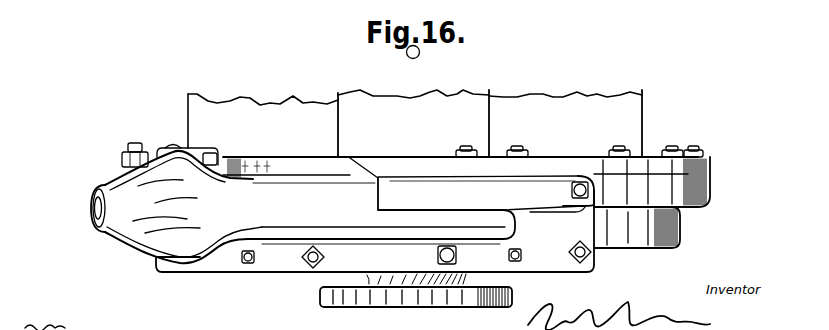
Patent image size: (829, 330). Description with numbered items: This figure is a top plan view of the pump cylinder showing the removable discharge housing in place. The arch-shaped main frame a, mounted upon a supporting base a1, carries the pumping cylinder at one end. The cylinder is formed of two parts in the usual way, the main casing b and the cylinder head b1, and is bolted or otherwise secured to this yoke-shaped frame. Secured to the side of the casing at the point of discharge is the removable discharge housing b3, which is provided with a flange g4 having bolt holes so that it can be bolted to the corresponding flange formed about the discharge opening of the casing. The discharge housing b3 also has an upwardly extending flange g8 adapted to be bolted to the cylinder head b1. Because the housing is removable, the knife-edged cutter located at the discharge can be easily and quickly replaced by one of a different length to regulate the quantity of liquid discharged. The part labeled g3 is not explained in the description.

The arch-shaped frame a is at (440, 115).
The supporting base a1 is at (563, 112).
The main casing b is at (652, 230).
The cylinder head b1 is at (650, 166).
The discharge housing b3 is at (130, 212).
The roller / wheel g3 is at (410, 307).
The flange g4 is at (288, 258).
The upwardly extending flange g8 is at (482, 190).